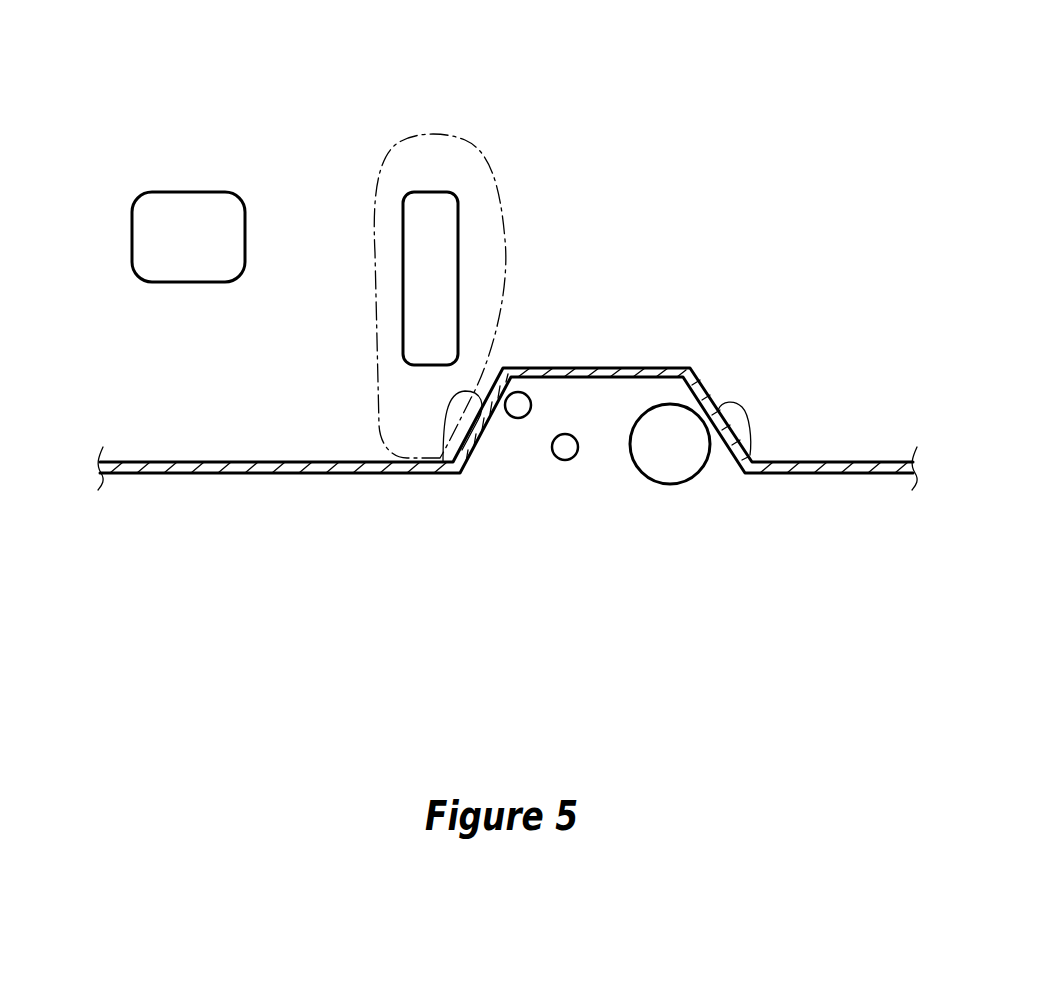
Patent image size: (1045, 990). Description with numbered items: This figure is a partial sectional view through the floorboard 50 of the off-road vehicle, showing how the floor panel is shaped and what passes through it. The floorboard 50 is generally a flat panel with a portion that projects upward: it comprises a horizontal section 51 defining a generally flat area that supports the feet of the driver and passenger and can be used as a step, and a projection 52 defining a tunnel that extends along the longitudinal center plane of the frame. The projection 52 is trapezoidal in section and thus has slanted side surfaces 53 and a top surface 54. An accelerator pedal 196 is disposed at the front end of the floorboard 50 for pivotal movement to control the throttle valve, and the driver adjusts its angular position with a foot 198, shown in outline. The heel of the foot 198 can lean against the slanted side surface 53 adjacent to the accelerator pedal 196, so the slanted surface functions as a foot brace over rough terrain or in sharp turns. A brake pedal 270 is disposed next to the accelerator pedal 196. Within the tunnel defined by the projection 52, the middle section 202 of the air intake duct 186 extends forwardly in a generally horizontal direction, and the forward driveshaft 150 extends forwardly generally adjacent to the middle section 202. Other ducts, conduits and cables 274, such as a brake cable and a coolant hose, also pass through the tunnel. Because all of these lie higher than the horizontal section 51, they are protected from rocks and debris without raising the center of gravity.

The floorboard 50 is at (152, 460).
The horizontal section 51 is at (200, 463).
The projection 52 is at (680, 357).
The slanted side surface 53 is at (463, 400).
The top surface 54 is at (602, 367).
The forward driveshaft 150 is at (565, 460).
The air intake duct 186 is at (643, 480).
The accelerator pedal 196 is at (458, 217).
The foot 198 is at (452, 132).
The middle section 202 is at (668, 484).
The brake pedal 270 is at (152, 225).
The ducts, conduits and cables 274 is at (516, 418).